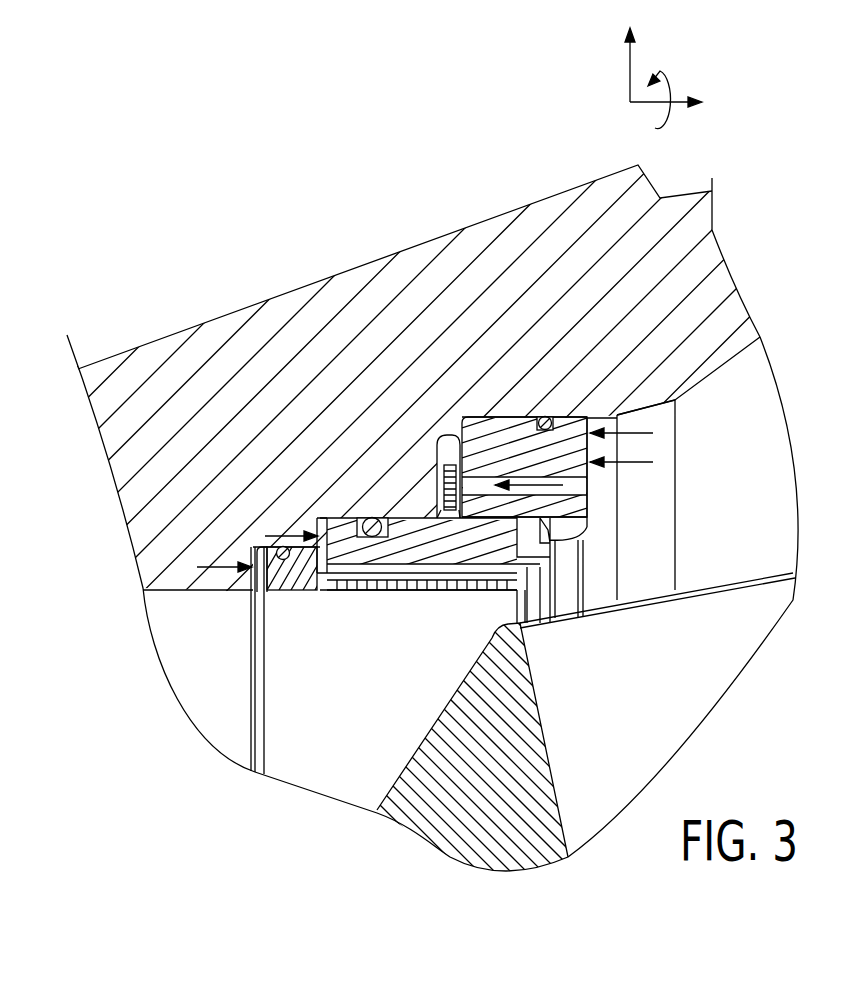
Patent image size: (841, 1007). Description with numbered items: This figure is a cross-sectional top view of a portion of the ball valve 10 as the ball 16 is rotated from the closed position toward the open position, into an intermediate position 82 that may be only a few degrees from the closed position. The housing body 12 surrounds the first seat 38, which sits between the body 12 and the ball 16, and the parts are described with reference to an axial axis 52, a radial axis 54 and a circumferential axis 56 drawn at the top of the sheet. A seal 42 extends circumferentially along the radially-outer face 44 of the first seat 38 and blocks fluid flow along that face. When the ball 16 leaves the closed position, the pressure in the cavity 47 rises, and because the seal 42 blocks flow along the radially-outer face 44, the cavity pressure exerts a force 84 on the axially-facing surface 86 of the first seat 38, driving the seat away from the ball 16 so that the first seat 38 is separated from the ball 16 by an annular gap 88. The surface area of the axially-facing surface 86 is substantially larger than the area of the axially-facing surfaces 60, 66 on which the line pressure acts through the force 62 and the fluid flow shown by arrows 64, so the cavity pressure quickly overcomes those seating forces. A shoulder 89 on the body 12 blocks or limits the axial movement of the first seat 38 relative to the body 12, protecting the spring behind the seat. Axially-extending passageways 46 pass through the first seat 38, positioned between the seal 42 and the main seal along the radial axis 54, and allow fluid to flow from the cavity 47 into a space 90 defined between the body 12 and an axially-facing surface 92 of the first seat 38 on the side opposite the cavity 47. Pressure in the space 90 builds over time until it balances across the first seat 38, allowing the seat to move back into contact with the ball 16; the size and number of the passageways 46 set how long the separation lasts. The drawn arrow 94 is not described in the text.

The ball valve 10 is at (726, 66).
The body 12 is at (512, 237).
The ball 16 is at (527, 698).
The first seat 38 is at (502, 413).
The seal 42 is at (547, 414).
The radially-outer face 44 is at (513, 415).
The passageways 46 is at (520, 497).
The cavity 47 is at (756, 500).
The axial axis 52 is at (660, 105).
The radial axis 54 is at (630, 72).
The circumferential axis 56 is at (672, 120).
The axially-facing surface 60 is at (253, 566).
The force 62 is at (221, 570).
The arrows 64 is at (292, 545).
The axially-facing surface 66 is at (320, 545).
The intermediate position 82 is at (525, 178).
The force 84 is at (625, 435).
The axially-facing surface 86 is at (617, 418).
The gap 88 is at (575, 612).
The shoulder 89 is at (460, 418).
The space 90 is at (443, 452).
The axially-facing surface 92 is at (446, 437).
The flow channel 94 is at (535, 485).